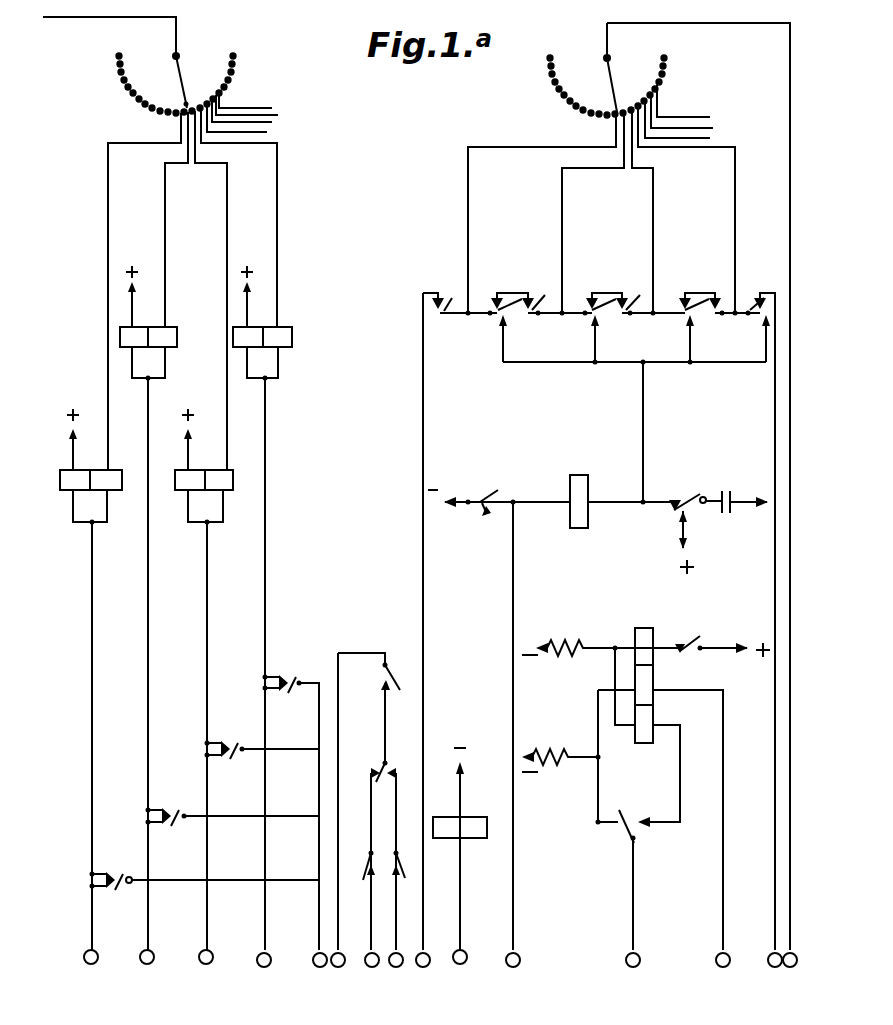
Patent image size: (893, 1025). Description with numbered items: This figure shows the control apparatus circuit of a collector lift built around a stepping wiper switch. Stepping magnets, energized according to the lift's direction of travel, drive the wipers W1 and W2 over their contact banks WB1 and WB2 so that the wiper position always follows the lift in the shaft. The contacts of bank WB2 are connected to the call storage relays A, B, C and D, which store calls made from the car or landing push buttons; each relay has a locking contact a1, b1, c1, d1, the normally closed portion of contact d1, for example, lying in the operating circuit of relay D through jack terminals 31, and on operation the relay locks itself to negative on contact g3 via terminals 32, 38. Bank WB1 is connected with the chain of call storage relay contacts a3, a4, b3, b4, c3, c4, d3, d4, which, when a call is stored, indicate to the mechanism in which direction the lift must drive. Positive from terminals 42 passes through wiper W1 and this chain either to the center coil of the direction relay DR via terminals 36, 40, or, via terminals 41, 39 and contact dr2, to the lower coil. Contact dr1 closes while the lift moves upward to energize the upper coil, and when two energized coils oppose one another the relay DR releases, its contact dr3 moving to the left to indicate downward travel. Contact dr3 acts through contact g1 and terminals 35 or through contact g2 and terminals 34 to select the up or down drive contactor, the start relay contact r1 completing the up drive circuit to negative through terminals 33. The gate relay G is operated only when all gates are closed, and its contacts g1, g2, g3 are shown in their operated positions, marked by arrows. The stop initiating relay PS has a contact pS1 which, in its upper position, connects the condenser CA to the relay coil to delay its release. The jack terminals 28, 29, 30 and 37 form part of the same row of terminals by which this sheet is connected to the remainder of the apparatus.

The wiper W2 is at (186, 96).
The contact bank WB2 is at (125, 85).
The wiper W1 is at (620, 98).
The contact bank WB1 is at (560, 88).
The call storage relay A is at (122, 480).
The call storage relay B is at (177, 337).
The call storage relay C is at (233, 480).
The call storage relay D is at (292, 337).
The contact a1 of relay A a1 is at (117, 882).
The contact b1 of relay B b1 is at (172, 816).
The contact c1 of relay C c1 is at (229, 750).
The contact d1 is at (286, 684).
The call storage relay contact a3 is at (450, 300).
The call storage relay contact a4 is at (498, 312).
The call storage relay contact b3 is at (541, 293).
The call storage relay contact b4 is at (594, 312).
The call storage relay contact c3 is at (635, 293).
The call storage relay contact c4 is at (686, 312).
The call storage relay contact d3 is at (710, 304).
The call storage relay contact d4 is at (759, 312).
The gate relay contact g3 is at (487, 495).
The stop initiating relay PS is at (573, 528).
The contact pS1 is at (695, 524).
The condenser CA is at (735, 488).
The direction relay DR is at (639, 743).
The direction relay contact dr1 is at (692, 640).
The direction relay contact dr2 is at (636, 816).
The direction relay contact dr3 is at (380, 768).
The start relay contact r1 is at (384, 676).
The gate relay contact g1 is at (403, 872).
The gate relay contact g2 is at (371, 868).
The gate relay G is at (476, 838).
The terminal 28 is at (90, 964).
The terminal 29 is at (147, 972).
The terminal 30 is at (206, 964).
The jack terminals 31 is at (264, 974).
The terminals 32 is at (320, 967).
The jack terminals 33 is at (343, 974).
The terminals 34 is at (371, 967).
The jack terminals 35 is at (401, 974).
The terminals 36 is at (422, 967).
The terminal 37 is at (461, 972).
The terminals 38 is at (513, 967).
The terminals 39 is at (634, 974).
The terminals 40 is at (723, 967).
The terminals 41 is at (775, 974).
The terminals 42 is at (789, 967).